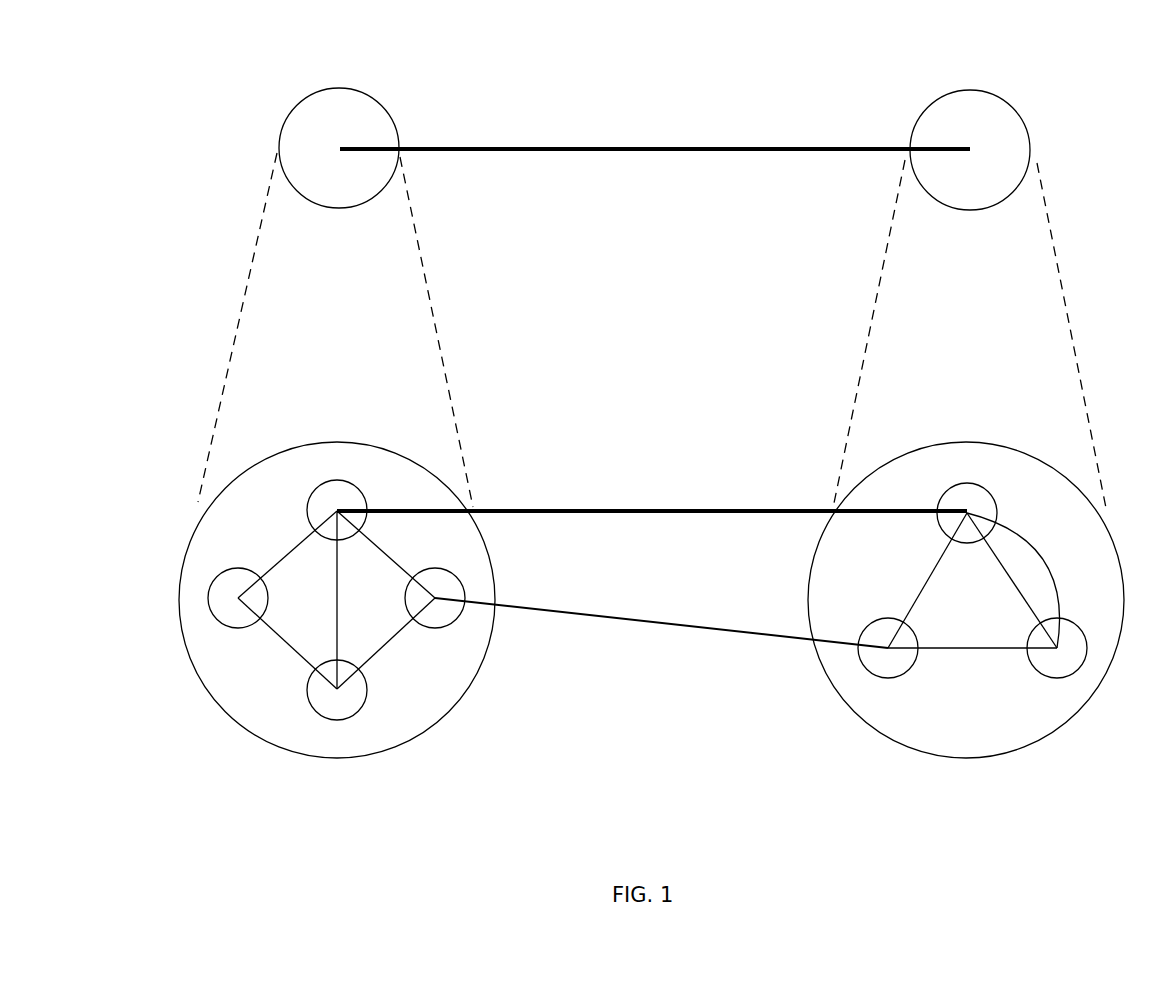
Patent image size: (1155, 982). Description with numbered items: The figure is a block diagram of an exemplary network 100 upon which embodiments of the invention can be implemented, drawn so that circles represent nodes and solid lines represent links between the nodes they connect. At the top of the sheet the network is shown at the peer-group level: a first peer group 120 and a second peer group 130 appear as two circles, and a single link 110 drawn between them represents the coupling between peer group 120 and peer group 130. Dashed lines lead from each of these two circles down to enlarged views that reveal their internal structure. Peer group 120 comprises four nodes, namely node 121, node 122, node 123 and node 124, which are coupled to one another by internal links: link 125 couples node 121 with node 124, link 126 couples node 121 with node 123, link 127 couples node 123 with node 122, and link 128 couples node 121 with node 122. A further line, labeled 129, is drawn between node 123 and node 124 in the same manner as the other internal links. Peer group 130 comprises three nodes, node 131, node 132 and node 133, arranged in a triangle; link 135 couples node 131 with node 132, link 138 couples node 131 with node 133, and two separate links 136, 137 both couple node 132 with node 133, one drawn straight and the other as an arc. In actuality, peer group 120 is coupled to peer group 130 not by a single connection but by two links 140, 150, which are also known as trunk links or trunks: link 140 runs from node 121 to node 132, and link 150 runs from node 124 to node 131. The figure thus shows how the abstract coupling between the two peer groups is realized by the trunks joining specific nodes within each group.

The network 100 is at (663, 740).
The link 110 is at (617, 147).
The peer group 120 is at (339, 82).
The peer group 130 is at (970, 82).
The node 121 is at (310, 495).
The node 122 is at (230, 627).
The node 123 is at (313, 708).
The node 124 is at (453, 625).
The link 125 is at (377, 545).
The link 126 is at (335, 605).
The link 127 is at (298, 660).
The link 128 is at (287, 553).
The internal link of first node 129 is at (380, 657).
The node 131 is at (895, 678).
The node 132 is at (947, 493).
The node 133 is at (1038, 677).
The link 135 is at (927, 582).
The link 136 is at (1038, 545).
The link 137 is at (1022, 598).
The link 138 is at (973, 650).
The link 140 is at (613, 509).
The link 150 is at (655, 624).